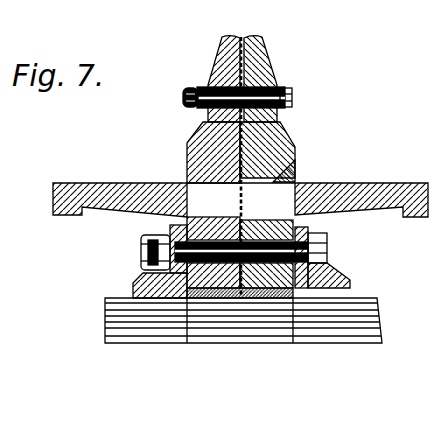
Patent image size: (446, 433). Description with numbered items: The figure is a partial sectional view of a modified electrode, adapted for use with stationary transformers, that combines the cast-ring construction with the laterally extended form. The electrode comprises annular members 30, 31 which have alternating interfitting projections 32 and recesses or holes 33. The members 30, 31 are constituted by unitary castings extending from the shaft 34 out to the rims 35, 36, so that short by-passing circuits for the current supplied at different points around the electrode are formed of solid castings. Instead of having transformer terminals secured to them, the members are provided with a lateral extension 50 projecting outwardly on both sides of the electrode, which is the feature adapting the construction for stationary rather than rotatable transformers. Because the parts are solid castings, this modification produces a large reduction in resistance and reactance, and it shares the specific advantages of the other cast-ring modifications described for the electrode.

The annular member 30 is at (217, 138).
The annular member 31 is at (277, 135).
The projection 32 is at (265, 198).
The recess or hole 33 is at (287, 163).
The shaft 34 is at (115, 297).
The rim 35 is at (215, 53).
The rim 36 is at (258, 52).
The lateral extension 50 is at (100, 183).